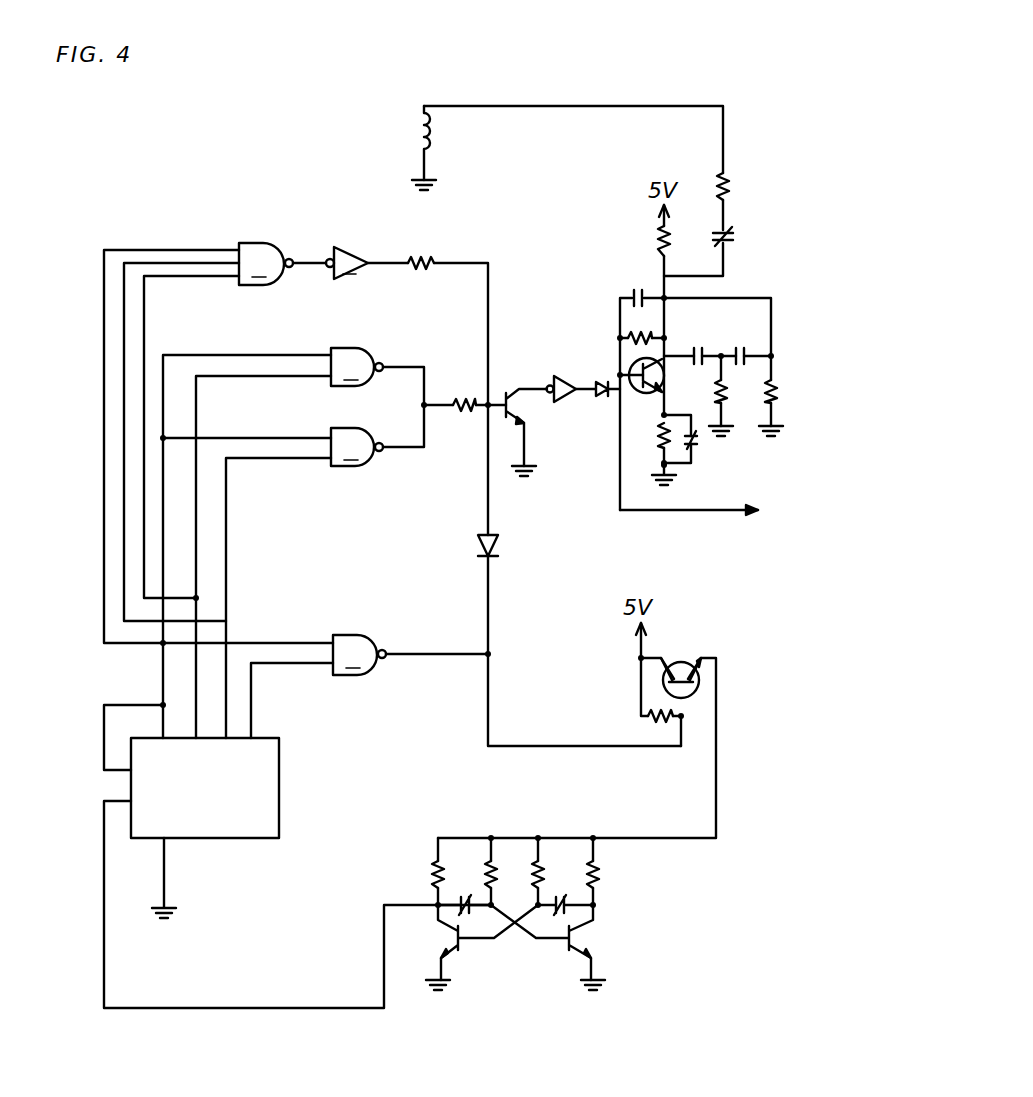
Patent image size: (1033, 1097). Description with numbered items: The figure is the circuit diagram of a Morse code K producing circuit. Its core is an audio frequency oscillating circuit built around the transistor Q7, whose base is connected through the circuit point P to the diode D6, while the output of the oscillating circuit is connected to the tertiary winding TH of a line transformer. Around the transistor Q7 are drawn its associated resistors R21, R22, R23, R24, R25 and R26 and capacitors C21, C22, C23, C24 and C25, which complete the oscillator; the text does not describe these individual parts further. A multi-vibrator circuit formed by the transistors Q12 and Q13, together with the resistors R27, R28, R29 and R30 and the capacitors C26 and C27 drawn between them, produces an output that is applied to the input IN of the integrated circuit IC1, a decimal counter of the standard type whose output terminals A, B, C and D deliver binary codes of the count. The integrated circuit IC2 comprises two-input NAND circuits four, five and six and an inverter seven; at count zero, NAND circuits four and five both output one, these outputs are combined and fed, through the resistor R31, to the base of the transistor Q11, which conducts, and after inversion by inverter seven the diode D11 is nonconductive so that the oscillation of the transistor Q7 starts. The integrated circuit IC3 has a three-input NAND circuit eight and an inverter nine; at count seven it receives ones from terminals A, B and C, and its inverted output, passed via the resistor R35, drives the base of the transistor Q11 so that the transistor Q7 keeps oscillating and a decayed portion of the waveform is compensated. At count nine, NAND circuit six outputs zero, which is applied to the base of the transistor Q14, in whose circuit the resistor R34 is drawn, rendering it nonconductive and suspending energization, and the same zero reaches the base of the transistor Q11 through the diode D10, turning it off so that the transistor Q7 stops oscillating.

The integrated circuit IC3 is at (287, 196).
The integrated circuit IC2 is at (342, 539).
The integrated circuit IC1 is at (278, 788).
The tertiary winding TH is at (434, 128).
The resistor R35 is at (421, 254).
The resistor R31 is at (461, 397).
The transistor Q11 is at (516, 383).
The diode D10 is at (497, 542).
The diode D11 is at (600, 394).
The resistor R26 is at (725, 181).
The variable capacitor C25 is at (732, 235).
The resistor R21 is at (661, 247).
The capacitor C21 is at (636, 286).
The resistor R22 is at (646, 326).
The circuit point P is at (631, 357).
The transistor Q7 is at (660, 363).
The capacitor C23 is at (696, 344).
The capacitor C24 is at (739, 345).
The resistor R24 is at (744, 393).
The resistor R25 is at (774, 389).
The resistor R23 is at (652, 437).
The variable capacitor C22 is at (697, 434).
The diode D6 is at (711, 509).
The transistor Q14 is at (680, 659).
The resistor R34 is at (667, 718).
The resistor R27 is at (435, 868).
The resistor R28 is at (487, 870).
The resistor R29 is at (534, 868).
The resistor R30 is at (596, 864).
The variable capacitor C26 is at (464, 890).
The variable capacitor C27 is at (559, 893).
The transistor Q12 is at (449, 948).
The transistor Q13 is at (573, 948).